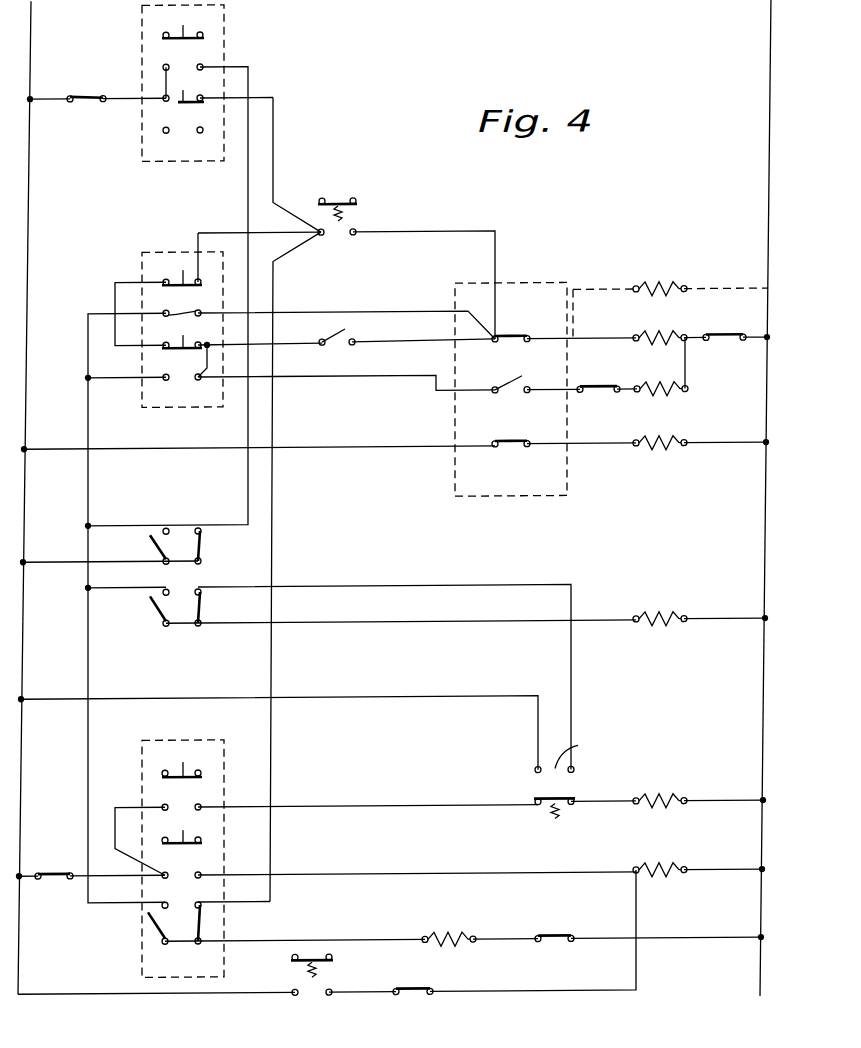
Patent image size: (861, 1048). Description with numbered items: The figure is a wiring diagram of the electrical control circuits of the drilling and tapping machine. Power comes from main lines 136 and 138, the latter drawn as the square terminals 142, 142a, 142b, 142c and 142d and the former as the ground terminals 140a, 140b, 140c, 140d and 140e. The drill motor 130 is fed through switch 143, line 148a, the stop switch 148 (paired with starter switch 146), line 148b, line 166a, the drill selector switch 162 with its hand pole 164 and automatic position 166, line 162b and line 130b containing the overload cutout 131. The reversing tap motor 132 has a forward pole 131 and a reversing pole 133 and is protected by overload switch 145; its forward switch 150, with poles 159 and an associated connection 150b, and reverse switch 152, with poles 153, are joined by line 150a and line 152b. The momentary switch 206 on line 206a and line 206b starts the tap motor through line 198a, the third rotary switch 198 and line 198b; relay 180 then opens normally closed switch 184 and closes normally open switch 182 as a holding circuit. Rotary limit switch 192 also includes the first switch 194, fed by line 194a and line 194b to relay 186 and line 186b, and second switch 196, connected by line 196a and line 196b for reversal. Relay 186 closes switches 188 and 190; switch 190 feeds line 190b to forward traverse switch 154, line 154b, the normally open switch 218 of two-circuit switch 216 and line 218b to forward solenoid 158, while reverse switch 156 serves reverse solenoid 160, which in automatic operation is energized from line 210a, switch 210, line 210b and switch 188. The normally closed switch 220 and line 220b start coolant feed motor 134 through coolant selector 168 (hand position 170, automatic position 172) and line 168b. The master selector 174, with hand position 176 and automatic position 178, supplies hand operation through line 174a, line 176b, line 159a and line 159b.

The drill motor 130 is at (447, 940).
The line 130b is at (510, 940).
The forward pole 131 is at (636, 339).
The reversing tap motor 132 is at (670, 392).
The reversing pole 133 is at (660, 444).
The coolant feed motor 134 is at (660, 635).
The main power line 136 is at (770, 180).
The main power line 138 is at (30, 230).
The terminal 140a is at (763, 445).
The terminal 140b is at (762, 802).
The terminal 140c is at (767, 291).
The terminal 140d is at (766, 340).
The terminal 140e is at (720, 938).
The terminal 142 is at (31, 96).
The terminal 142a is at (25, 447).
The terminal 142b is at (20, 872).
The terminal 142c is at (23, 698).
The terminal 142d is at (25, 561).
The switch 143 is at (74, 96).
The overload switch 145 is at (703, 338).
The starter switch 146 is at (200, 54).
The stop switch 148 is at (180, 105).
The line 148a is at (120, 97).
The line 148b is at (274, 99).
The forward switch 150 is at (180, 300).
The line 150a is at (221, 233).
The conductor 150b is at (115, 292).
The reverse switch 152 is at (185, 360).
The line 152b is at (212, 334).
The poles 153 is at (168, 379).
The forward switch 154 is at (192, 797).
The line 154b is at (320, 806).
The reverse switch 156 is at (186, 862).
The forward solenoid 158 is at (665, 801).
The poles 159 is at (165, 315).
The line 159a is at (88, 380).
The line 159b is at (320, 303).
The reverse solenoid 160 is at (668, 872).
The manual selector switch 162 is at (180, 940).
The line 162b is at (318, 940).
The hand position 164 is at (163, 906).
The automatic position 166 is at (197, 903).
The line 166a is at (274, 277).
The manual selector switch 168 is at (185, 619).
The line 168b is at (338, 625).
The hand position 170 is at (150, 597).
The automatic position 172 is at (228, 590).
The master selector switch 174 is at (183, 550).
The line 174a is at (118, 567).
The hand position 176 is at (167, 528).
The line 176b is at (89, 522).
The automatic position 178 is at (198, 528).
The relay 180 is at (660, 290).
The switch 182 is at (352, 335).
The switch 184 is at (612, 379).
The relay 186 is at (660, 462).
The line 186b is at (740, 452).
The switch 188 is at (415, 991).
The switch 190 is at (56, 873).
The line 190b is at (113, 878).
The rotary limit switch 192 is at (574, 291).
The first switch 194 is at (512, 452).
The line 194a is at (326, 447).
The line 194b is at (604, 452).
The second switch 196 is at (512, 402).
The line 196a is at (316, 363).
The line 196b is at (555, 395).
The third switch 198 is at (514, 340).
The line 198a is at (496, 285).
The line 198b is at (577, 343).
The switch 206 is at (343, 224).
The line 206a is at (275, 190).
The line 206b is at (493, 234).
The switch 210 is at (310, 996).
The line 210a is at (19, 965).
The line 210b is at (376, 996).
The two-position two-circuit switch 216 is at (562, 791).
The switch 218 is at (577, 803).
The line 218b is at (608, 807).
The switch 220 is at (581, 750).
The line 220b is at (572, 686).